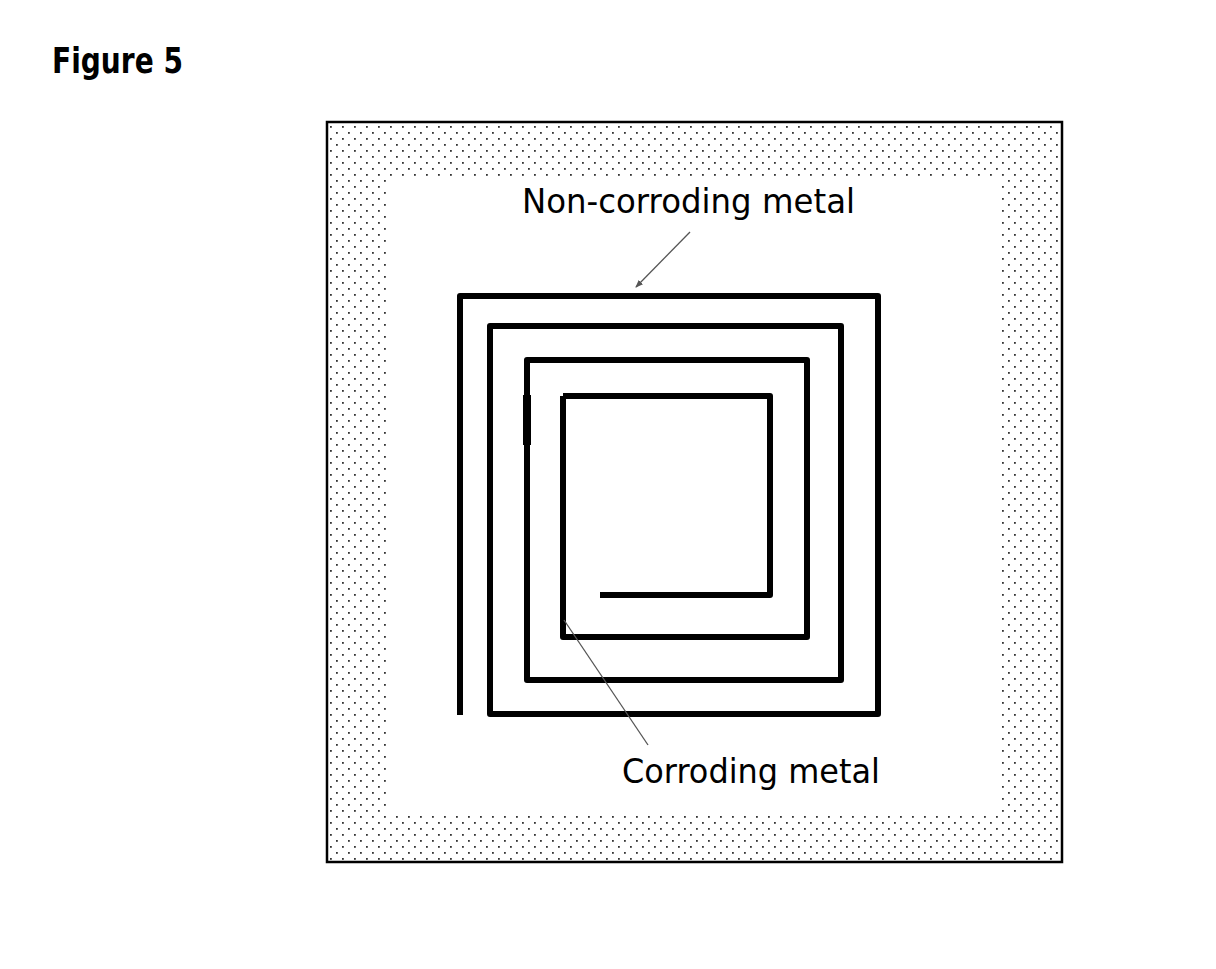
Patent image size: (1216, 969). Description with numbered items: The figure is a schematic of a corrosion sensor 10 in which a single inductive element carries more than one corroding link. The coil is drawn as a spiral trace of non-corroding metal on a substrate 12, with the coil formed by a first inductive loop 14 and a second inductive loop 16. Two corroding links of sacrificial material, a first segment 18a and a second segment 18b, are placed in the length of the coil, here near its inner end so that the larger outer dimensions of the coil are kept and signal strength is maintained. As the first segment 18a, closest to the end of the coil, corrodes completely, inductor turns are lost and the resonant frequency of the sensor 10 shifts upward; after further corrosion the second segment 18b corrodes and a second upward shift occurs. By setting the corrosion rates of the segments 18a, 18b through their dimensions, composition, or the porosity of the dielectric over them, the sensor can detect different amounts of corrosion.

The corrosion sensor 10 is at (259, 153).
The substrate 12 is at (379, 217).
The first inductive loop 14 is at (456, 483).
The second inductive loop 16 is at (771, 503).
The first corroding segment 18a is at (557, 620).
The second corroding segment 18b is at (521, 407).